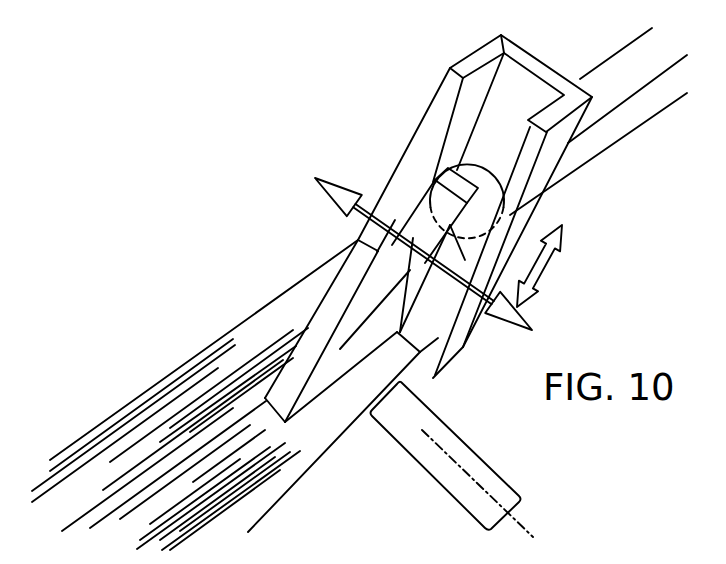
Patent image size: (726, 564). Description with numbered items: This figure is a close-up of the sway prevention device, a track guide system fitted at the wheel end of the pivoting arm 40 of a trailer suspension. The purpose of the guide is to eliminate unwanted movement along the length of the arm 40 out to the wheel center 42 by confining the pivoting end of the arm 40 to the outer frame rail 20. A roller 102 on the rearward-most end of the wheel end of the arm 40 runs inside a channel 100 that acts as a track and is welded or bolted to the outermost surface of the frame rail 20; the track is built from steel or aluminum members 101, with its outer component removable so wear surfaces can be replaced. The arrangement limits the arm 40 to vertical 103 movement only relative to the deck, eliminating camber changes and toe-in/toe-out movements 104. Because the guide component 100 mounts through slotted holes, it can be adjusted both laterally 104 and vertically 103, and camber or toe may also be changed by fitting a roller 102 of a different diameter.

The frame rail 20 is at (117, 410).
The pivoting arm 40 is at (285, 502).
The wheel center 42 is at (535, 537).
The channel 100 is at (513, 45).
The track members 101 is at (348, 287).
The roller 102 is at (462, 252).
The vertical movement 103 is at (543, 272).
The lateral movement 104 is at (337, 203).